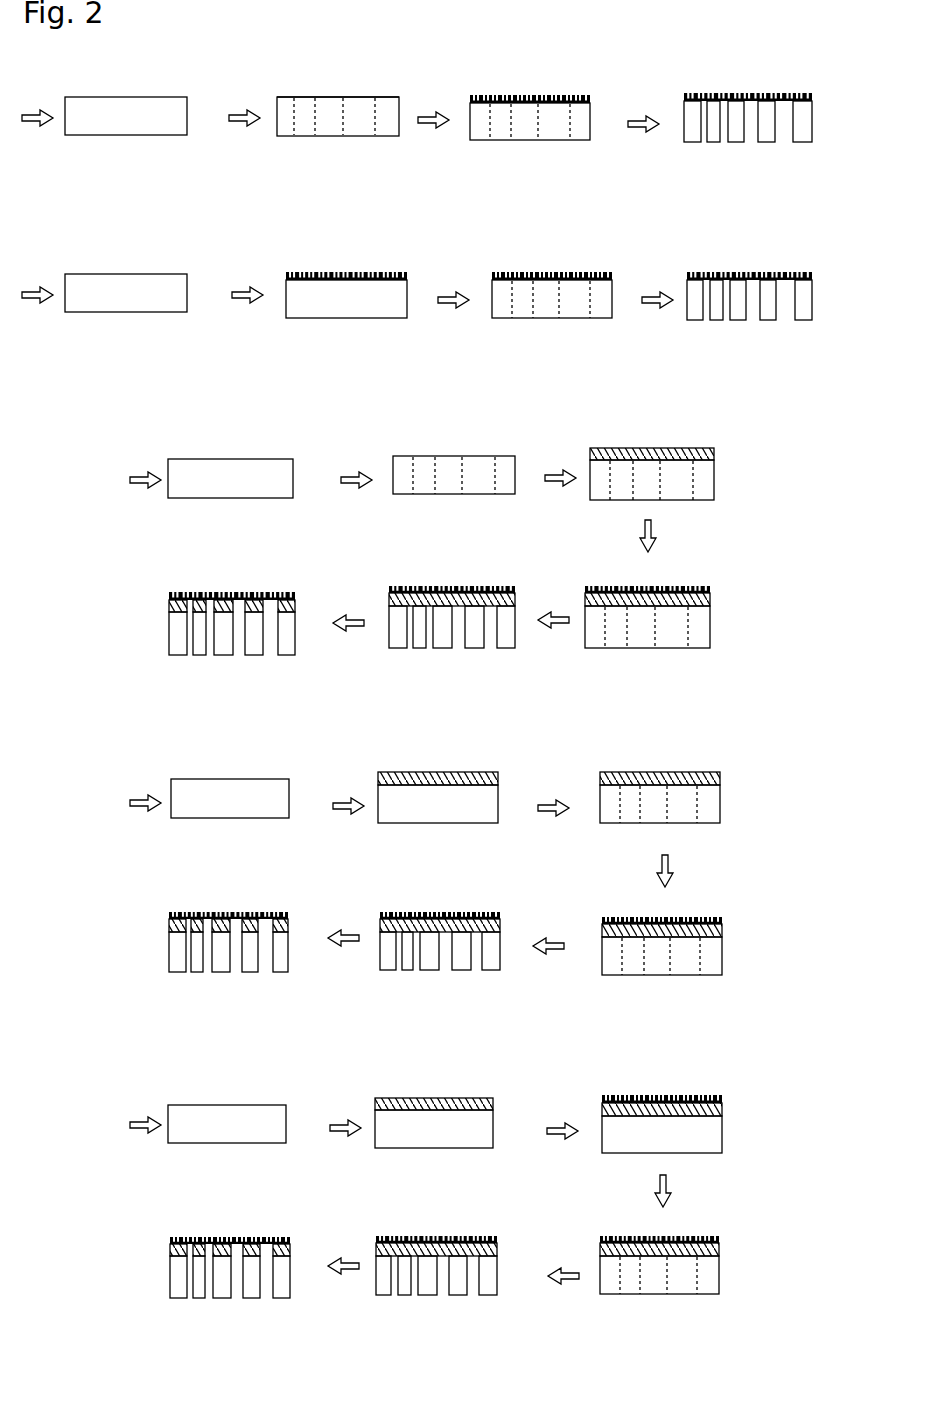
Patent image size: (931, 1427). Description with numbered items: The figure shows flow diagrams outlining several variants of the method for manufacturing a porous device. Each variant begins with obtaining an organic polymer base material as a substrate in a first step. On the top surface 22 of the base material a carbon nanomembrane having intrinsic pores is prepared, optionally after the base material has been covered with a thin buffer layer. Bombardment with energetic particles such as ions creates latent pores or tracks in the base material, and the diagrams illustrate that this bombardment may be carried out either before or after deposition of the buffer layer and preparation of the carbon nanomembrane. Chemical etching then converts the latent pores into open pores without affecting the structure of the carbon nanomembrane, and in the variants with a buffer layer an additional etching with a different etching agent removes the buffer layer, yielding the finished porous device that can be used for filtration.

The top surface 22 is at (354, 84).